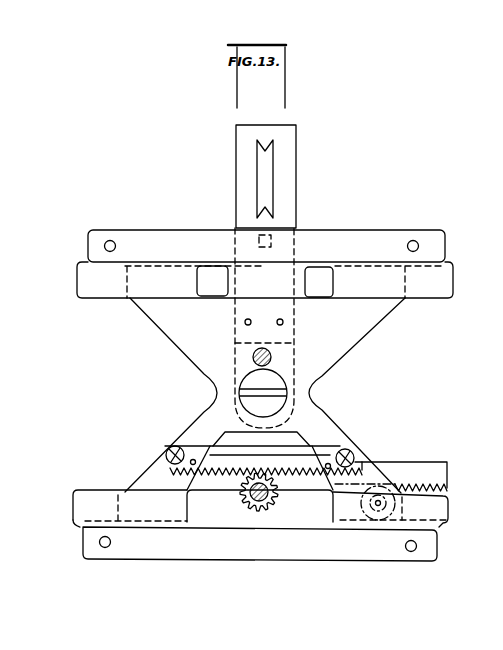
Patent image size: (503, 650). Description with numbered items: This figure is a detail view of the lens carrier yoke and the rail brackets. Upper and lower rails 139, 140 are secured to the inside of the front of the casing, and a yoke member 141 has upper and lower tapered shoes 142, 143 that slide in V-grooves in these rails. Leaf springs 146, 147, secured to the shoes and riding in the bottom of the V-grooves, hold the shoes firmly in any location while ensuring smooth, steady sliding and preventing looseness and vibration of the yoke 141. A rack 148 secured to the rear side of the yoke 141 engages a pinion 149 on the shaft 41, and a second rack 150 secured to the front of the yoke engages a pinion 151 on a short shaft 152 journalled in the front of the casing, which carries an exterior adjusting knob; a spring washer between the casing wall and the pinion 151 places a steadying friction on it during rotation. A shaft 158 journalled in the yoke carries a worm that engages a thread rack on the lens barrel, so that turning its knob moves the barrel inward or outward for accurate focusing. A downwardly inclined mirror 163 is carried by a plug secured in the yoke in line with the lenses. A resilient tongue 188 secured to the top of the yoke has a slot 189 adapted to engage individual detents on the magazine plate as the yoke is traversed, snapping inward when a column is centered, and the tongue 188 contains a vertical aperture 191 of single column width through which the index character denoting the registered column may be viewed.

The shaft 41 is at (393, 483).
The upper rail 139 is at (367, 235).
The lower rail 140 is at (365, 561).
The yoke member 141 is at (338, 357).
The upper tapered shoe 142 is at (318, 288).
The lower tapered shoe 143 is at (332, 507).
The leaf spring 146 is at (320, 266).
The leaf spring 147 is at (448, 513).
The rack 148 is at (448, 478).
The pinion 149 is at (412, 482).
The second rack 150 is at (164, 470).
The pinion 151 is at (252, 503).
The short shaft 152 is at (240, 492).
The shaft 158 is at (272, 356).
The downwardly inclined mirror 163 is at (281, 407).
The resilient tongue 188 is at (293, 191).
The slot 189 is at (275, 233).
The vertical aperture 191 is at (273, 165).